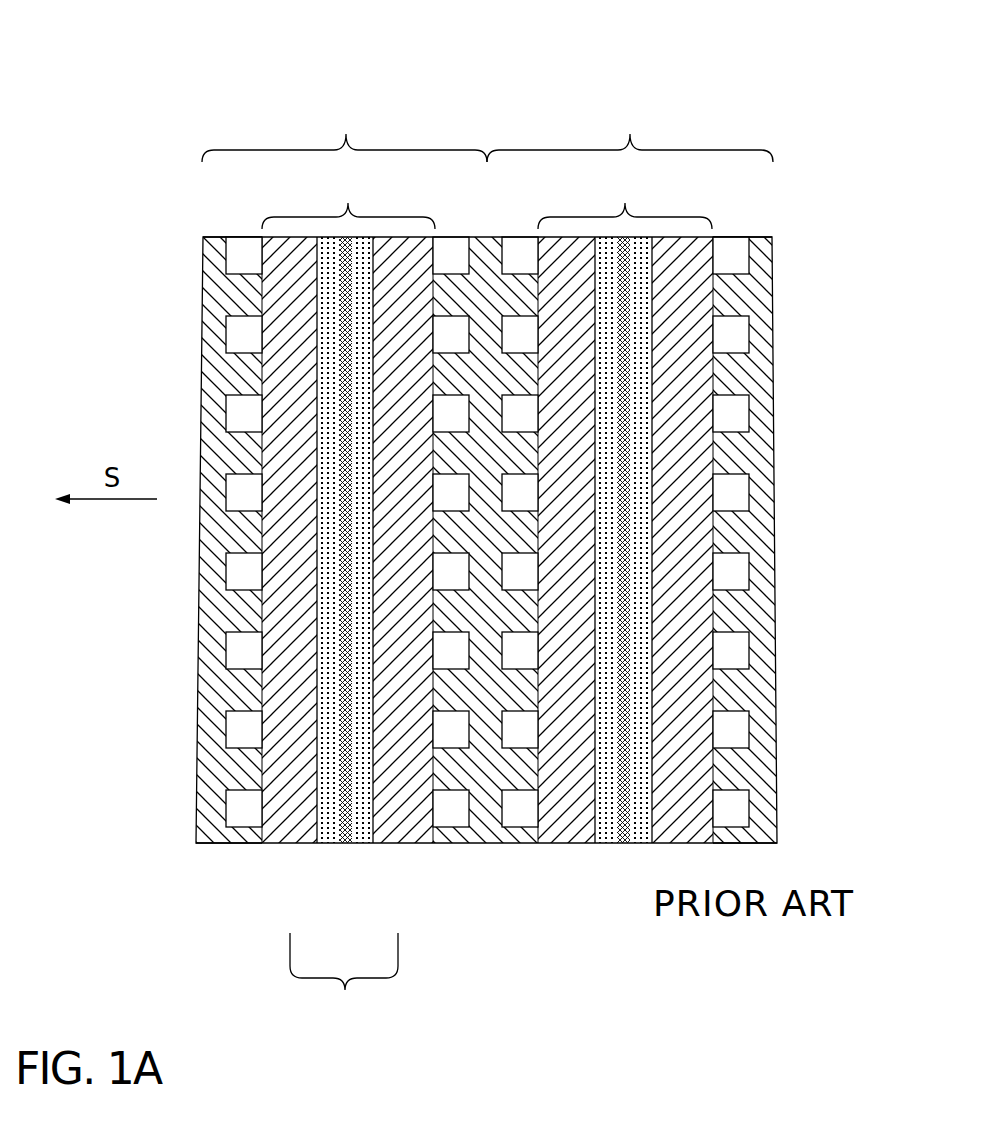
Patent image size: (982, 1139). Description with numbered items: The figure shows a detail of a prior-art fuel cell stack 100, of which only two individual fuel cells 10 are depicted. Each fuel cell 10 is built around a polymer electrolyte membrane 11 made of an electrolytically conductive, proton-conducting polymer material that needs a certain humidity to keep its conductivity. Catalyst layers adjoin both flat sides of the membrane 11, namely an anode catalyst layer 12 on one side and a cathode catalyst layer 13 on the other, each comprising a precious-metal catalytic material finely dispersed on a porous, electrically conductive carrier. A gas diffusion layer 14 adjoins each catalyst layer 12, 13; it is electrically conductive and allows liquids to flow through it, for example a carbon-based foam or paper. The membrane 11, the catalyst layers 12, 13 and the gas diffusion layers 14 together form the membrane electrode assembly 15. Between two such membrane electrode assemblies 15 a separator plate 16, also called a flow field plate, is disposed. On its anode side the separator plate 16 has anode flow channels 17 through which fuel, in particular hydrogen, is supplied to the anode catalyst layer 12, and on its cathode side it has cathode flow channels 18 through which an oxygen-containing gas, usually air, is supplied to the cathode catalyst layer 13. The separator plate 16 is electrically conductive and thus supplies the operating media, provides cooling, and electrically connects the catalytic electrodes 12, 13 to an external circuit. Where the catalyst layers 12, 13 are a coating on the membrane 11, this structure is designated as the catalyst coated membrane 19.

The fuel cell stack 100 is at (170, 90).
The fuel cell 10 is at (487, 133).
The membrane electrode assembly 15 is at (487, 199).
The separator plate 16 is at (205, 808).
The anode flow channels 17 is at (238, 734).
The cathode flow channels 18 is at (737, 732).
The gas diffusion layer 14 is at (291, 819).
The anode catalyst layer 12 is at (329, 824).
The cathode catalyst layer 13 is at (362, 824).
The polymer electrolyte membrane 11 is at (346, 832).
The catalyst coated membrane 19 is at (344, 979).